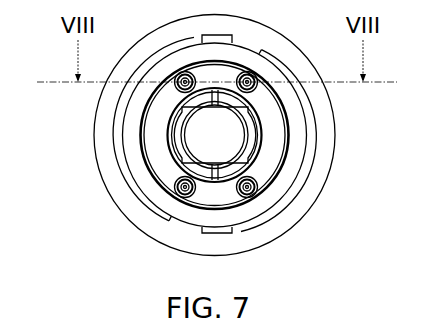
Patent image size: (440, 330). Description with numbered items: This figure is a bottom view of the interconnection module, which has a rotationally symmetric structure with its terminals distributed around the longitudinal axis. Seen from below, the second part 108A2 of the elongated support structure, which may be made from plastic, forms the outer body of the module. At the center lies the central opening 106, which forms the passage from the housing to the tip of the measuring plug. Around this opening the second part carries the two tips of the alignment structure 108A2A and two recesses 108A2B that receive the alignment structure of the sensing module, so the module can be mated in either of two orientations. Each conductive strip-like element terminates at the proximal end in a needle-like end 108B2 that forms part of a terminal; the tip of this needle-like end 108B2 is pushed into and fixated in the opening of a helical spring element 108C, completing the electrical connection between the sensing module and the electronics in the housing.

The central opening 106 is at (213, 133).
The second part 108A2 is at (325, 145).
The alignment structure 108A2A is at (196, 165).
The recesses 108A2B is at (176, 136).
The needle-like end 108B2 is at (252, 198).
The helical spring element 108C is at (256, 190).